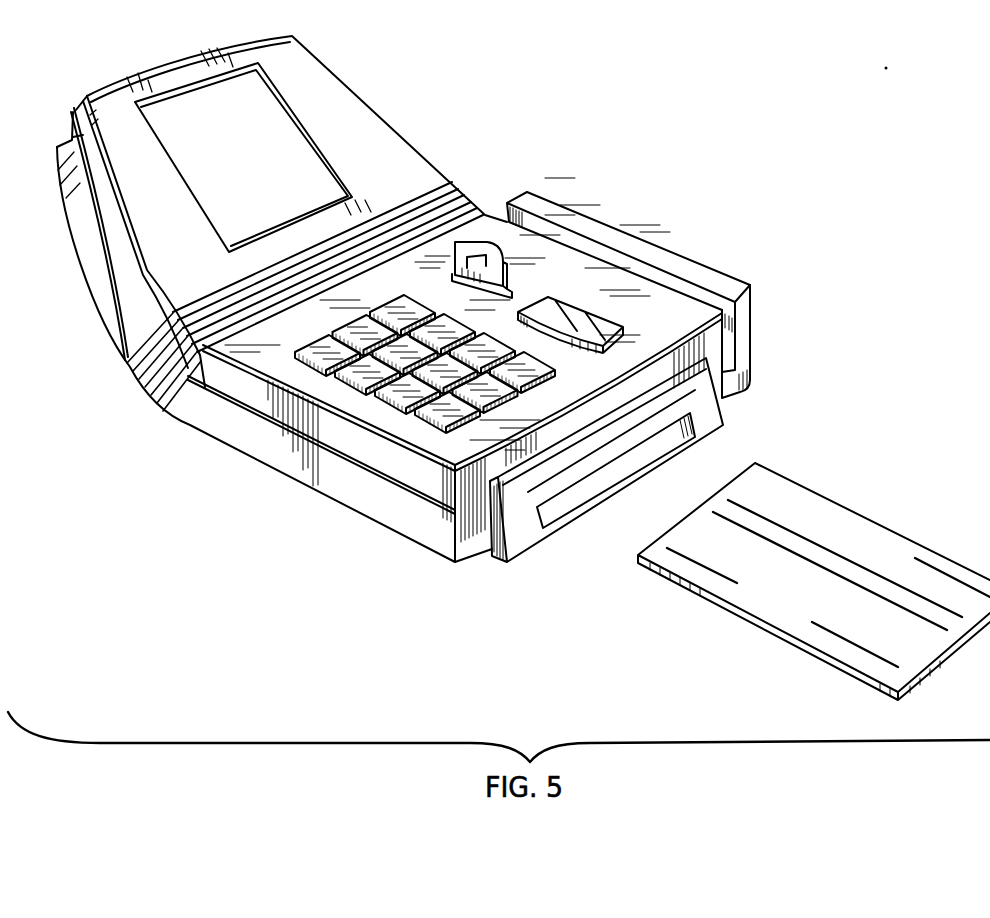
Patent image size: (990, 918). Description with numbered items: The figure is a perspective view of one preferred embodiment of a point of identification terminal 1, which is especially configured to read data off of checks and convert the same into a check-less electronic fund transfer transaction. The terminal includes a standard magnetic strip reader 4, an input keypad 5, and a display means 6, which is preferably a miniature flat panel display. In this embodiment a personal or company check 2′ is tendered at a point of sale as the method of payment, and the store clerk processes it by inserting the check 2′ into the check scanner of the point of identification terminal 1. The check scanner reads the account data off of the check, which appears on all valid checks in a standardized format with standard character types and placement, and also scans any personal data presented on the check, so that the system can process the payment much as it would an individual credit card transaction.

The point of identification terminal 1 is at (403, 314).
The display means 6 is at (273, 128).
The input keypad 5 is at (352, 385).
The magnetic strip reader 4 is at (490, 213).
The check 2′ is at (858, 516).